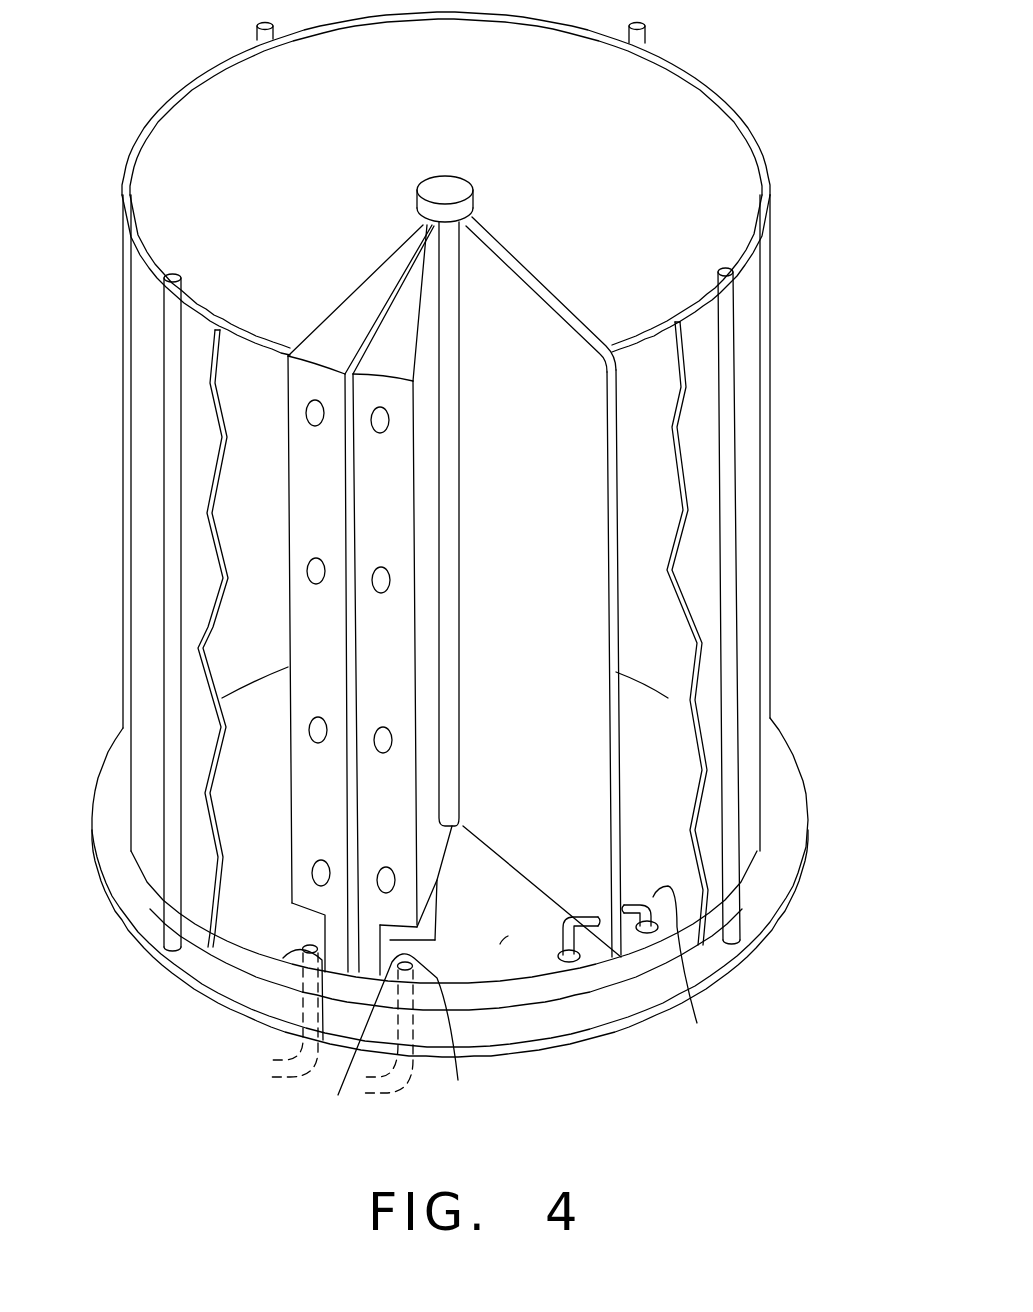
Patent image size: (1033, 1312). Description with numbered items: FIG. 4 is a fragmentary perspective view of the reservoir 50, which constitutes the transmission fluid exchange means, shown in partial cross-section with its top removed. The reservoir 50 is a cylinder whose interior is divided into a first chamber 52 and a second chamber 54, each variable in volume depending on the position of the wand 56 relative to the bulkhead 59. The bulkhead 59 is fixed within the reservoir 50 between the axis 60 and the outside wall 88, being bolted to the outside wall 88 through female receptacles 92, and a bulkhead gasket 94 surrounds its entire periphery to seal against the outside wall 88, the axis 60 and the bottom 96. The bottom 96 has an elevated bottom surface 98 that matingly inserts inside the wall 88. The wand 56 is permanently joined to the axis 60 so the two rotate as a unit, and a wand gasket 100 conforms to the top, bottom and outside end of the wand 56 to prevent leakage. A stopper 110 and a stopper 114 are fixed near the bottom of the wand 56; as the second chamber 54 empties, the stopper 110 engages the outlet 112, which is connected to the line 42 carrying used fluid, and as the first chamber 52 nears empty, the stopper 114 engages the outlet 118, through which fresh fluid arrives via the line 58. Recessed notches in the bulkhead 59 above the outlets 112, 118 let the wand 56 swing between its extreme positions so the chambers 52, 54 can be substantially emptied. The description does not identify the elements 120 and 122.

The reservoir 50 is at (768, 100).
The first chamber 52 is at (673, 627).
The second chamber 54 is at (520, 950).
The wand 56 is at (568, 426).
The line 58 is at (272, 1077).
The bulkhead 59 is at (404, 246).
The axis 60 is at (458, 178).
The outside wall 88 is at (162, 340).
The female receptacles 92 is at (373, 578).
The bulkhead gasket 94 is at (358, 336).
The bottom 96 is at (778, 938).
The elevated bottom surface 98 is at (697, 1023).
The wand gasket 100 is at (606, 498).
The stopper 110 is at (550, 958).
The outlet 112 is at (347, 1090).
The stopper 114 is at (633, 937).
The outlet 118 is at (283, 958).
The plate tab 120 is at (280, 935).
The retaining clip 122 is at (458, 1080).
The line 42 is at (392, 1085).